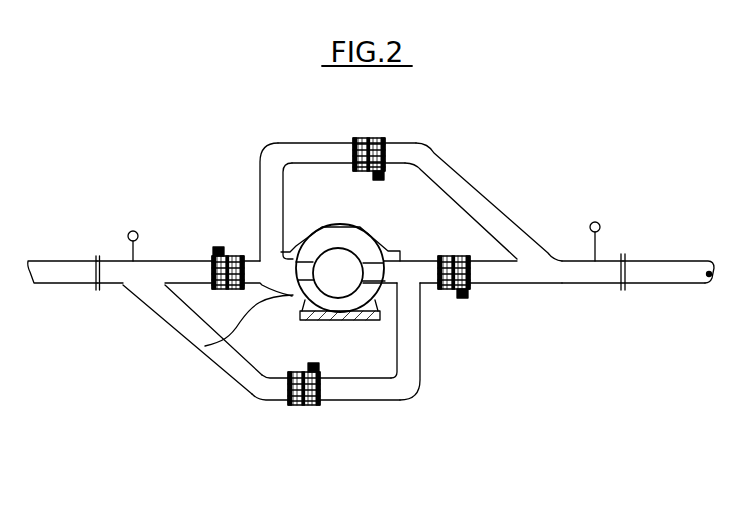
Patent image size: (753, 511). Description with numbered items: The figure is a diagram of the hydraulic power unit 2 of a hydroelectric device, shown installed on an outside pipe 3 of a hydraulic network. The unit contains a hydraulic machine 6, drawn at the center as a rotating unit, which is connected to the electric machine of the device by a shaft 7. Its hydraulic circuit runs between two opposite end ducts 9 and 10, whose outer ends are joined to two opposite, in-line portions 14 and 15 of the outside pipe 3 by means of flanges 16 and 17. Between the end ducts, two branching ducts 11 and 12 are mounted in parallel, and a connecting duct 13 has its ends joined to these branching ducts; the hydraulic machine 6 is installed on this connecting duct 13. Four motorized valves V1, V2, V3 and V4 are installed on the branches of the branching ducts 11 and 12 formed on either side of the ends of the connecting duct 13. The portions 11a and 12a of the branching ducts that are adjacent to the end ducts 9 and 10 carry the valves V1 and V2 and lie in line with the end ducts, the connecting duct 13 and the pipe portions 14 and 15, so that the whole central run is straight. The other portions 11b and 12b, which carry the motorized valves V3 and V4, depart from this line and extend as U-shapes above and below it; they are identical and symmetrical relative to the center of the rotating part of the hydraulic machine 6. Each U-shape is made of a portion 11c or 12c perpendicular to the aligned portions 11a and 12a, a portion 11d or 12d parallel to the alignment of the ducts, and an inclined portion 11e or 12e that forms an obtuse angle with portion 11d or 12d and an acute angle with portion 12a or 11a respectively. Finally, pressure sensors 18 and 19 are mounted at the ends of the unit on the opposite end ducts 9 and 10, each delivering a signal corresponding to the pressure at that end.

The hydraulic power unit 2 is at (484, 166).
The pipe 3 is at (673, 258).
The hydraulic machine 6 is at (205, 346).
The shaft 7 is at (433, 356).
The end duct 9 is at (118, 282).
The end duct 10 is at (590, 284).
The branching duct 11 is at (437, 153).
The portion of branching duct 11a is at (197, 273).
The portion of branching duct 11b is at (481, 194).
The portion of branching duct 11c is at (265, 187).
The portion of branching duct 11d is at (322, 152).
The portion of branching duct 11e is at (457, 180).
The branching duct 12 is at (372, 402).
The portion of branching duct 12a is at (498, 273).
The portion of branching duct 12b is at (222, 378).
The portion of branching duct 12c is at (410, 358).
The portion of branching duct 12d is at (338, 391).
The portion of branching duct 12e is at (243, 386).
The connecting duct 13 is at (303, 238).
The portion of outside pipe 14 is at (47, 278).
The portion of outside pipe 15 is at (688, 278).
The flange 16 is at (90, 272).
The flange 17 is at (628, 272).
The pressure sensor 18 is at (128, 230).
The pressure sensor 19 is at (598, 222).
The motorized valve V1 is at (236, 250).
The motorized valve V2 is at (448, 292).
The motorized valve V3 is at (360, 136).
The motorized valve V4 is at (302, 407).